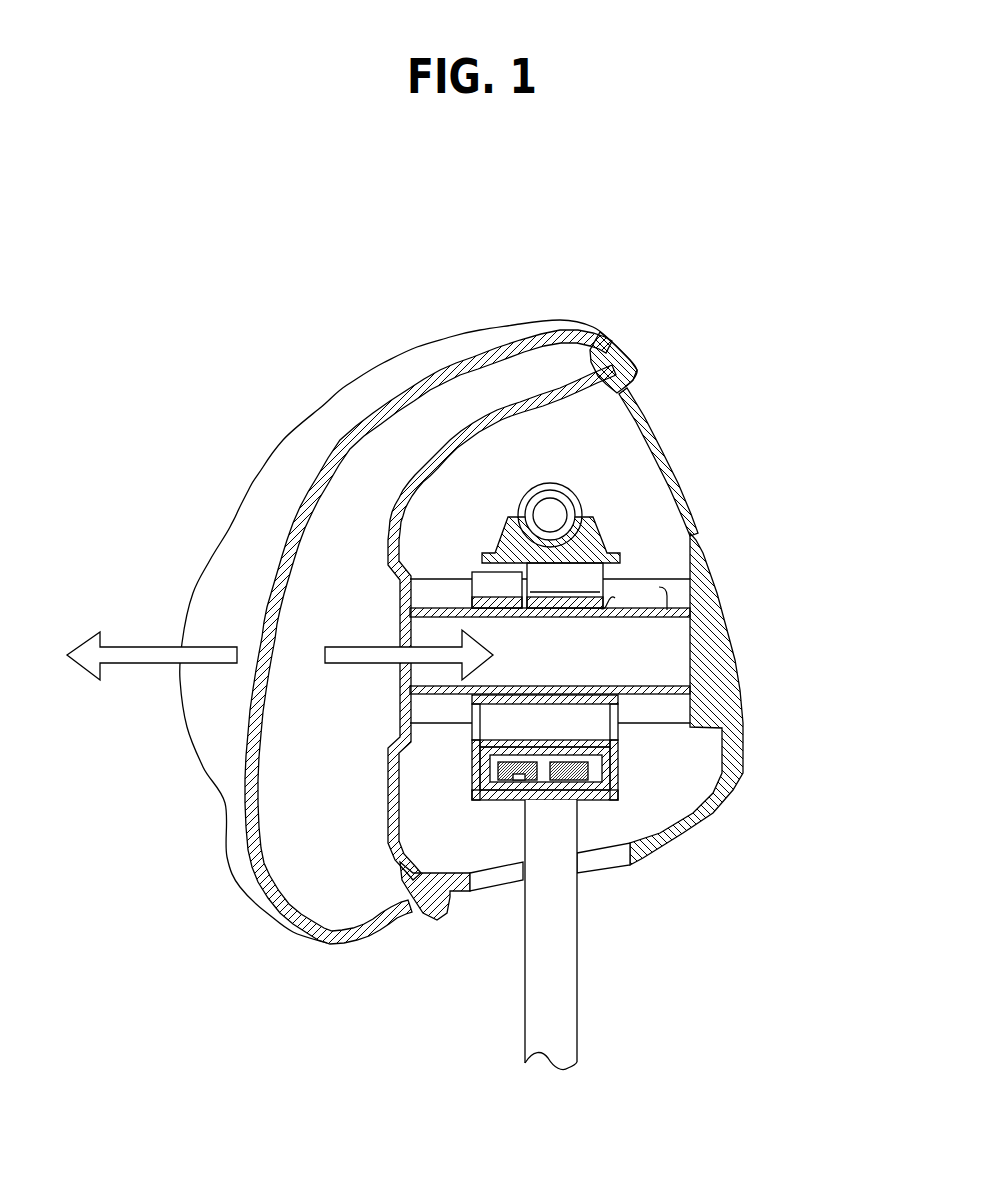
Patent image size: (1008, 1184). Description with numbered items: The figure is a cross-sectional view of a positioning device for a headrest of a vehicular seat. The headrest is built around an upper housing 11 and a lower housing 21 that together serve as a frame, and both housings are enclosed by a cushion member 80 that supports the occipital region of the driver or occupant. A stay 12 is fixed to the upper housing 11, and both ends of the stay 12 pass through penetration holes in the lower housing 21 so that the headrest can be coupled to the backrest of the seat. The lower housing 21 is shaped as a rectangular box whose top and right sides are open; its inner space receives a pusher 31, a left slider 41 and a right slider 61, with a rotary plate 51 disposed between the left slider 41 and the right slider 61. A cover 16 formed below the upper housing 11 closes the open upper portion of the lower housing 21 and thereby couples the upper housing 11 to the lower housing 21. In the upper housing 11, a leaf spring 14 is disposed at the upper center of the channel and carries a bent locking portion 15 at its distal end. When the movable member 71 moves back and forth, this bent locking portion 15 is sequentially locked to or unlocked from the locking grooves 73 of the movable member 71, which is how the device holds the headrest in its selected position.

The upper housing 11 is at (641, 531).
The stay 12 is at (648, 740).
The leaf spring 14 is at (553, 590).
The bent locking portion 15 is at (628, 625).
The cover 16 is at (633, 725).
The lower housing 21 is at (610, 883).
The pusher 31 is at (510, 890).
The left slider 41 is at (362, 785).
The rotary plate 51 is at (359, 635).
The right slider 61 is at (670, 768).
The movable member 71 is at (633, 675).
The locking grooves 73 is at (617, 585).
The cushion member 80 is at (371, 632).